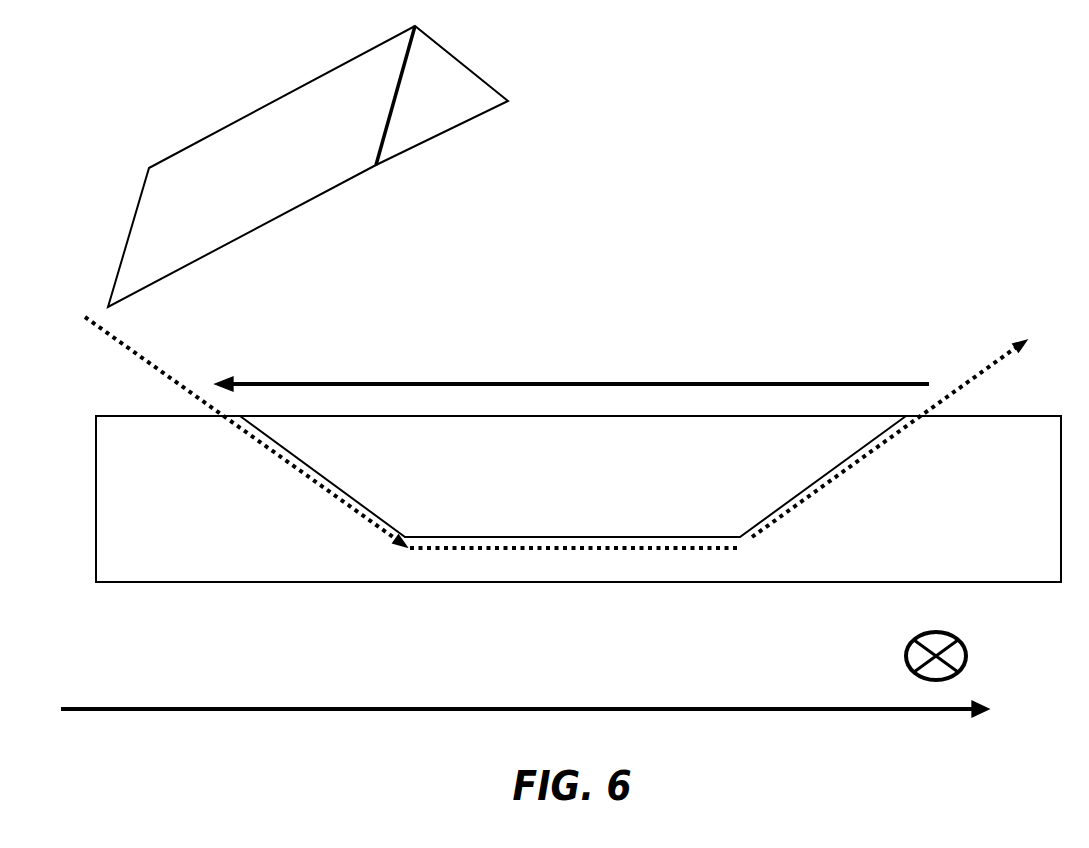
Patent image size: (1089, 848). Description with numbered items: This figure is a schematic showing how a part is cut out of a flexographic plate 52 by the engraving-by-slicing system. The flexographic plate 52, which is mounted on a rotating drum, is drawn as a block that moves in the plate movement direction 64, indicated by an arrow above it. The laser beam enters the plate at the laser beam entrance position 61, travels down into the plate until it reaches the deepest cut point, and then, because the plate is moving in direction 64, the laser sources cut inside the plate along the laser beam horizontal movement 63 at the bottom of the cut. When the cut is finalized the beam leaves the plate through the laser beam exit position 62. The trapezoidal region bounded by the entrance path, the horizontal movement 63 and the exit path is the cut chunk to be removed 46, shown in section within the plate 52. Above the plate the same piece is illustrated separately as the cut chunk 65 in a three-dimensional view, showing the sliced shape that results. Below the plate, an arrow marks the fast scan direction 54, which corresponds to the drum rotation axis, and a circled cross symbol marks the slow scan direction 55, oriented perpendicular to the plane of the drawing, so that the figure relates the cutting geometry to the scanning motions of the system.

The cut chunk to be removed 46 is at (591, 485).
The flexographic plate 52 is at (928, 519).
The fast scan direction 54 is at (160, 708).
The slow scan direction 55 is at (907, 653).
The laser beam entrance position into plate 61 is at (225, 418).
The laser beam exit position from plate 62 is at (903, 422).
The laser beam horizontal movement 63 is at (468, 553).
The plate movement direction 64 is at (528, 382).
The cut chunk—3D view 65 is at (273, 118).